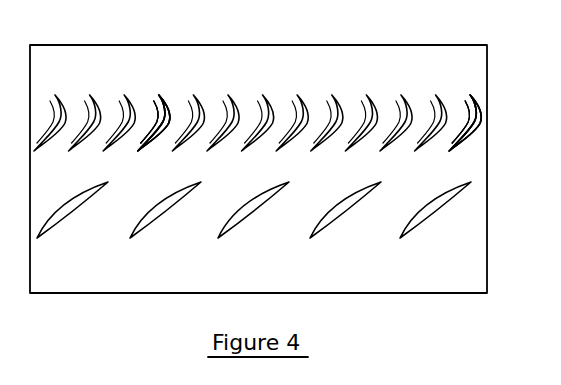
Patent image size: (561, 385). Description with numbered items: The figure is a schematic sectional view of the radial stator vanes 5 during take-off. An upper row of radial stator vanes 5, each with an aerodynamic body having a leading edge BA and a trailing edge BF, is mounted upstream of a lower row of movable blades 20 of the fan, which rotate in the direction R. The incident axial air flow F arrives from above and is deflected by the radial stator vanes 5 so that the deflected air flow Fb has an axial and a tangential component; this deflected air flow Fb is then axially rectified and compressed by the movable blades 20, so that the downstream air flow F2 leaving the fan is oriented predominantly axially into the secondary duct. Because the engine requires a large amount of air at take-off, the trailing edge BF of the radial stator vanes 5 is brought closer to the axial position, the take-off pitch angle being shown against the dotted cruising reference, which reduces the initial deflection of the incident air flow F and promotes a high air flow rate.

The radial stator vane 5 is at (193, 96).
The movable blade 20 is at (341, 218).
The leading edge BA is at (162, 97).
The trailing edge BF is at (147, 151).
The incident air flow F is at (338, 50).
The deflected air flow Fb is at (240, 181).
The downstream air flow F2 is at (127, 238).
The direction of rotation R is at (148, 207).